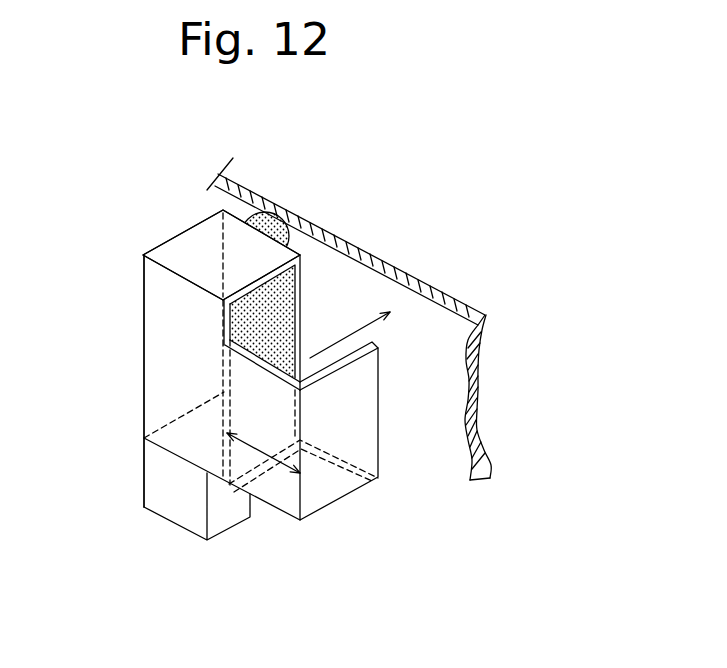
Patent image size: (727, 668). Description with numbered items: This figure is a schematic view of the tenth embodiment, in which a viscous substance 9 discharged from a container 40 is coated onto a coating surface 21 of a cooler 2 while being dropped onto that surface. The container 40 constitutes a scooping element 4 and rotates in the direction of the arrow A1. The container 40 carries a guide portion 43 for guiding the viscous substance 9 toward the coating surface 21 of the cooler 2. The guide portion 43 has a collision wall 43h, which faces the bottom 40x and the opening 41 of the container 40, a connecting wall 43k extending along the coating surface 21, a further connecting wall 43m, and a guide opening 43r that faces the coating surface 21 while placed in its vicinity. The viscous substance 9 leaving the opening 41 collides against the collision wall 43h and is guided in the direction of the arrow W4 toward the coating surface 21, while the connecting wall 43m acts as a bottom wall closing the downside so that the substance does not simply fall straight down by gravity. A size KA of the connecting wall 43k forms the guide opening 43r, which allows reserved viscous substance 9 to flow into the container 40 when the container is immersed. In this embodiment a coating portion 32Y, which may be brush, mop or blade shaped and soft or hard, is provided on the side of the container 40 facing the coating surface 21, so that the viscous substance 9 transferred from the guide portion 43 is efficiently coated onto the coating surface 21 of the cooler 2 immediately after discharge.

The scooping element 4 is at (132, 248).
The container 40 is at (183, 246).
The bottom 40x is at (182, 315).
The arrow A1 is at (205, 218).
The coating portion 32Y is at (270, 218).
The cooler 2 is at (370, 248).
The coating surface 21 is at (428, 320).
The guide opening 43r is at (372, 342).
The viscous substance 9 is at (272, 306).
The opening 41 is at (265, 332).
The arrow W4 is at (380, 327).
The connecting wall 43k is at (245, 388).
The collision wall 43h is at (363, 435).
The guide portion 43 is at (322, 493).
The connecting wall 43m is at (290, 488).
The size of the connecting wall KA is at (265, 455).